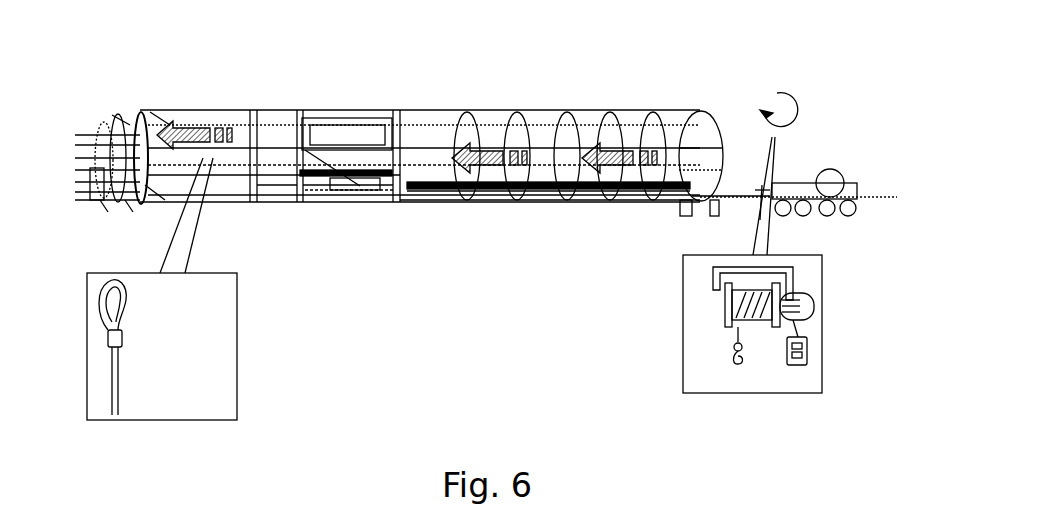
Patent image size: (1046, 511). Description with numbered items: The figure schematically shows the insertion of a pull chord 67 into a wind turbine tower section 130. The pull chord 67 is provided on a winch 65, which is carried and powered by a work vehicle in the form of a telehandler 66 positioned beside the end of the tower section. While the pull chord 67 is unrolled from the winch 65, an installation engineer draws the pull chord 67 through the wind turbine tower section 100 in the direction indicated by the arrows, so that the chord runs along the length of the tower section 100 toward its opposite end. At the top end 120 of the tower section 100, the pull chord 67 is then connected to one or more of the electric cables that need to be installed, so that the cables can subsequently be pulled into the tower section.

The wind turbine tower section 100 is at (487, 113).
The wind turbine tower section 130 is at (698, 111).
The top end 120 is at (137, 117).
The pull chord 67 is at (182, 132).
The telehandler 66 is at (833, 170).
The winch 65 is at (810, 305).